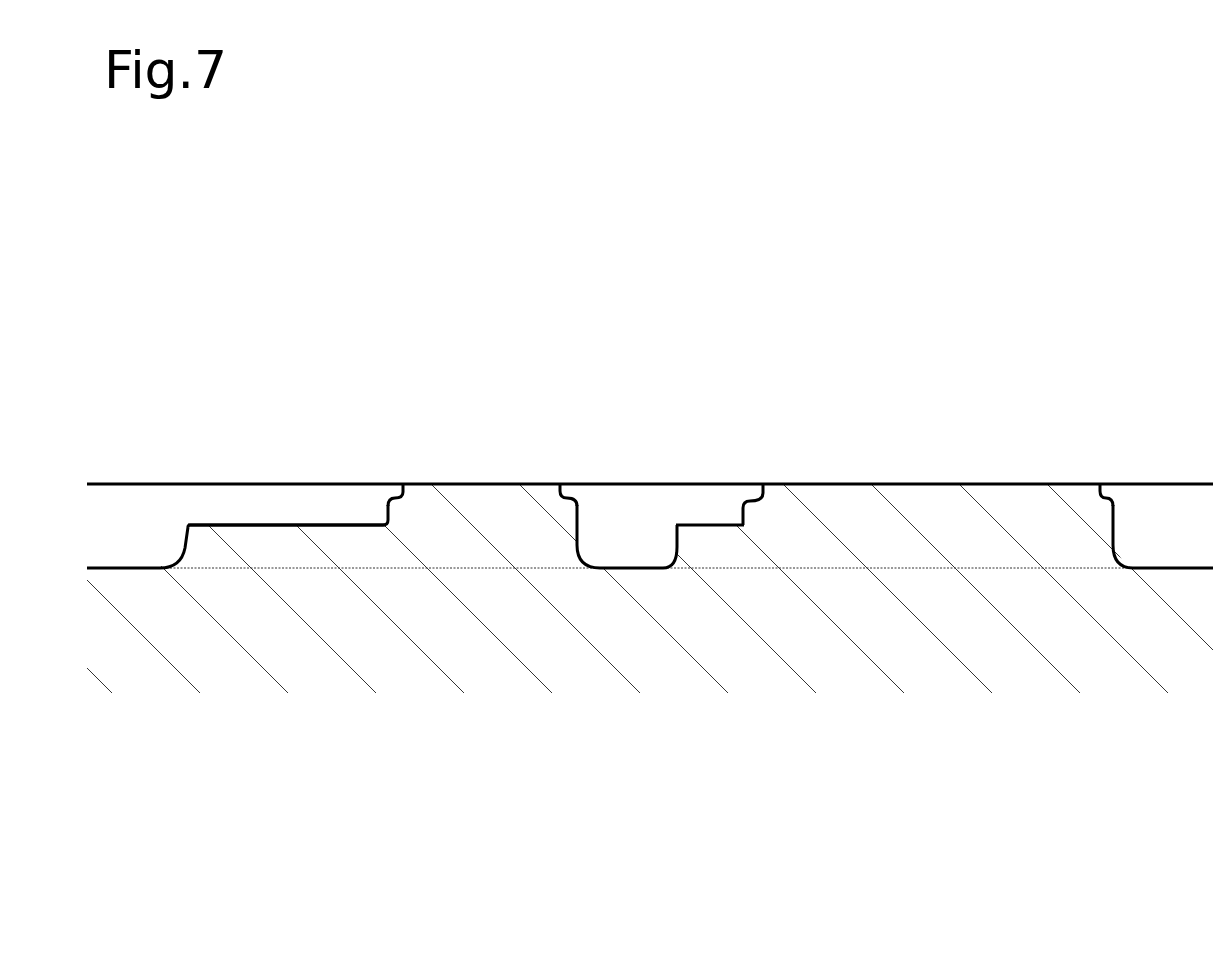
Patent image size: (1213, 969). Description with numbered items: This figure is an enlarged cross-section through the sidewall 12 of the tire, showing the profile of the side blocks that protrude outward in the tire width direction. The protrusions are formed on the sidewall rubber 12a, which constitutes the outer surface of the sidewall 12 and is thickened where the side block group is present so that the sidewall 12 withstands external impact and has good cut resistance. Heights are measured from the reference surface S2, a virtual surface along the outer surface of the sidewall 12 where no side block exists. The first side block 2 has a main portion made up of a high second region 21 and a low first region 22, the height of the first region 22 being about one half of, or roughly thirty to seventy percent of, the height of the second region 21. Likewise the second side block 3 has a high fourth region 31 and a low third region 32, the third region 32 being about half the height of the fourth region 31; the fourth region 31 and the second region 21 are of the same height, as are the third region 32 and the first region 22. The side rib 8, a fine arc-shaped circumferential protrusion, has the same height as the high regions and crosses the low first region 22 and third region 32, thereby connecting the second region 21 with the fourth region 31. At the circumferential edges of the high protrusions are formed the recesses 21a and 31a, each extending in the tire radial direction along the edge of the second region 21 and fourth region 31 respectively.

The sidewall 12 is at (647, 322).
The sidewall rubber 12a is at (170, 460).
The side rib 8 is at (232, 483).
The first side block 2 is at (350, 478).
The first region 22 is at (283, 524).
The second region 21 is at (483, 482).
The recess 21a is at (389, 483).
The second side block 3 is at (818, 478).
The third region 32 is at (710, 524).
The fourth region 31 is at (930, 482).
The recess 31a is at (752, 483).
The reference surface S2 is at (1002, 568).